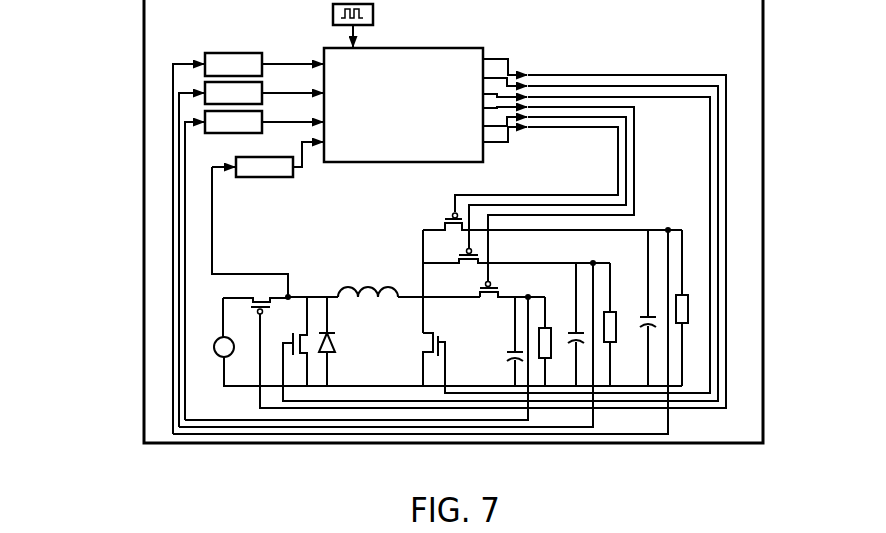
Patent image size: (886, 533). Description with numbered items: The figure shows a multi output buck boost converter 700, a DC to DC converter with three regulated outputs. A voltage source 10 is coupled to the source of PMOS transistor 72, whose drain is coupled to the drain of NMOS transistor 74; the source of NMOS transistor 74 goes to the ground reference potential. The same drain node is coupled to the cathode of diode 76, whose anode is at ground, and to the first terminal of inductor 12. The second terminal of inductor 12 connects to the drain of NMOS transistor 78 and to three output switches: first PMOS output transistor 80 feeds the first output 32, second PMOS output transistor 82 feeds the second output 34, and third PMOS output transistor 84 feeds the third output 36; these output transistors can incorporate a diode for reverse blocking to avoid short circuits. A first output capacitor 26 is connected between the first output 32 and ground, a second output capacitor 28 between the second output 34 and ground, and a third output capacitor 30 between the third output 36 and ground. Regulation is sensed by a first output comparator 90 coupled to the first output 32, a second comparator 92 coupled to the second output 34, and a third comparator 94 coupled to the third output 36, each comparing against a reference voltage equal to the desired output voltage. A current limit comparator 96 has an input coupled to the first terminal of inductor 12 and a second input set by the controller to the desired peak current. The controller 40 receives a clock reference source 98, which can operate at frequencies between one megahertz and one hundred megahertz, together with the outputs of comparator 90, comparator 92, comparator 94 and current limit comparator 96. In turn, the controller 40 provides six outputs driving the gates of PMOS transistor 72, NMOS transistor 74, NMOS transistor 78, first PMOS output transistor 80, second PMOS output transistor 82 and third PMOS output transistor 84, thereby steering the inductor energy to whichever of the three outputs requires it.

The multi output buck boost converter 700 is at (384, 482).
The voltage source 10 is at (214, 346).
The inductor 12 is at (370, 300).
The first output capacitor 26 is at (520, 359).
The second output capacitor 28 is at (583, 341).
The third output capacitor 30 is at (655, 326).
The first output 32 is at (528, 297).
The second output 34 is at (593, 263).
The third output 36 is at (668, 230).
The controller 40 is at (403, 48).
The PMOS transistor 72 is at (253, 303).
The NMOS transistor 74 is at (293, 366).
The diode 76 is at (323, 356).
The NMOS transistor 78 is at (427, 354).
The first PMOS output transistor 80 is at (480, 288).
The second PMOS output transistor 82 is at (460, 256).
The third PMOS output transistor 84 is at (442, 221).
The first output comparator 90 is at (232, 133).
The second comparator 92 is at (205, 89).
The third comparator 94 is at (233, 53).
The current limit comparator 96 is at (265, 177).
The clock reference source 98 is at (333, 14).